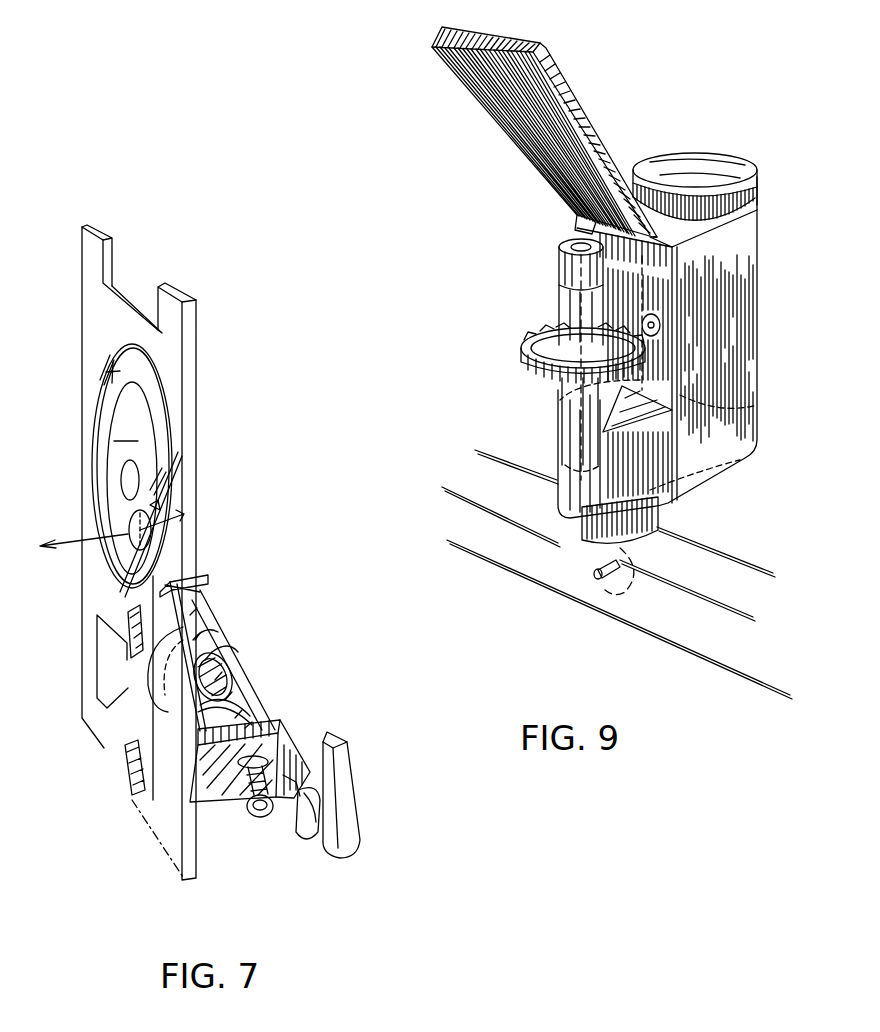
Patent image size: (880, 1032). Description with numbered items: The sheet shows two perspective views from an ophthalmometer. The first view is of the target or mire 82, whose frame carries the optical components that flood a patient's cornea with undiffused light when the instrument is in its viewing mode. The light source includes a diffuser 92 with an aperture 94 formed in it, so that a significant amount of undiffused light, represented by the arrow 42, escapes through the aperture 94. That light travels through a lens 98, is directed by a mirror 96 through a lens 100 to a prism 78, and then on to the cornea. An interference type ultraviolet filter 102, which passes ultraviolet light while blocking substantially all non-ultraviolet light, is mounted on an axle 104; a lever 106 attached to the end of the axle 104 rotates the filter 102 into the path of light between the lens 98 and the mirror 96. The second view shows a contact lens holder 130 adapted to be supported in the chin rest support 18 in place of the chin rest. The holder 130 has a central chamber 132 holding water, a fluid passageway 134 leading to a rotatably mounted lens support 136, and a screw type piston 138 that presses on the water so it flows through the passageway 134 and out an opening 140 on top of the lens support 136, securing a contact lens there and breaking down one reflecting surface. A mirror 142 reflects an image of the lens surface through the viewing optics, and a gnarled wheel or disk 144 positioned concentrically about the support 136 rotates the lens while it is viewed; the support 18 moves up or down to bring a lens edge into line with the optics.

In FIG. 7, the mire 82 is at (100, 246).
In FIG. 7, the prism 78 is at (187, 520).
In FIG. 7, the arrow 42 is at (64, 532).
In FIG. 7, the diffuser 92 is at (186, 602).
In FIG. 7, the aperture 94 is at (200, 614).
In FIG. 7, the mirror 96 is at (262, 717).
In FIG. 7, the lens 98 is at (195, 640).
In FIG. 7, the lens 100 is at (208, 583).
In FIG. 7, the ultraviolet filter 102 is at (240, 693).
In FIG. 7, the axle 104 is at (296, 784).
In FIG. 7, the lever 106 is at (346, 814).
In FIG. 9, the contact lens holder 130 is at (655, 94).
In FIG. 9, the central chamber 132 is at (772, 276).
In FIG. 9, the fluid passageway 134 is at (683, 505).
In FIG. 9, the lens support 136 is at (549, 306).
In FIG. 9, the screw type piston 138 is at (758, 178).
In FIG. 9, the opening 140 is at (566, 219).
In FIG. 9, the mirror 142 is at (520, 115).
In FIG. 9, the gnarled wheel or disk 144 is at (533, 380).
In FIG. 9, the chin rest support 18 is at (715, 578).